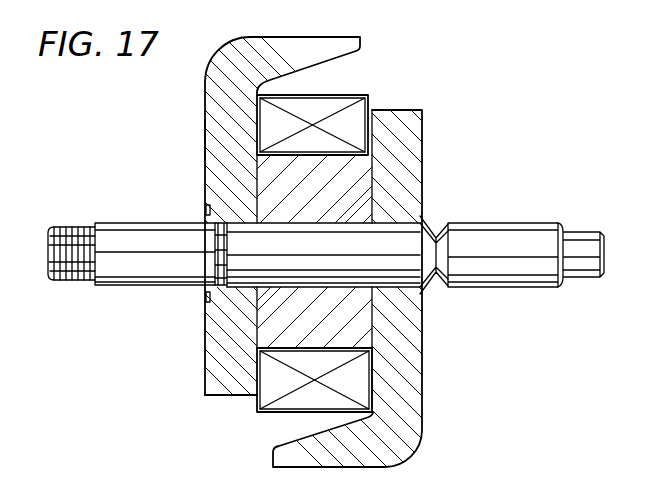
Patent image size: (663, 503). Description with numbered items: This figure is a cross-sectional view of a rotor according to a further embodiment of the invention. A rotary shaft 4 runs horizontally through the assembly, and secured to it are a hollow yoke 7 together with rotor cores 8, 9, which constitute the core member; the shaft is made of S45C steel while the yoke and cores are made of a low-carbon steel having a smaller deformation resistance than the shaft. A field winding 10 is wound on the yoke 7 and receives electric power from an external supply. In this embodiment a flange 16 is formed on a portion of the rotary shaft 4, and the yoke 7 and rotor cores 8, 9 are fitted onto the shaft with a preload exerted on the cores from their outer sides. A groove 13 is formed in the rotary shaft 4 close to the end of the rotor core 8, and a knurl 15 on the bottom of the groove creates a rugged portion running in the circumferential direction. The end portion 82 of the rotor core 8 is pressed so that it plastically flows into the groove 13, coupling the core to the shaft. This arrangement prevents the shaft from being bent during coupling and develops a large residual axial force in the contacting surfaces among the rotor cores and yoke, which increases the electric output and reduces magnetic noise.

The rotary shaft 4 is at (144, 235).
The hollow yoke 7 is at (267, 328).
The rotor core 8 is at (218, 88).
The rotor core 9 is at (423, 398).
The field winding 10 is at (290, 407).
The groove 13 is at (216, 270).
The knurl 15 is at (213, 262).
The flange 16 is at (430, 225).
The end portion 82 is at (205, 138).